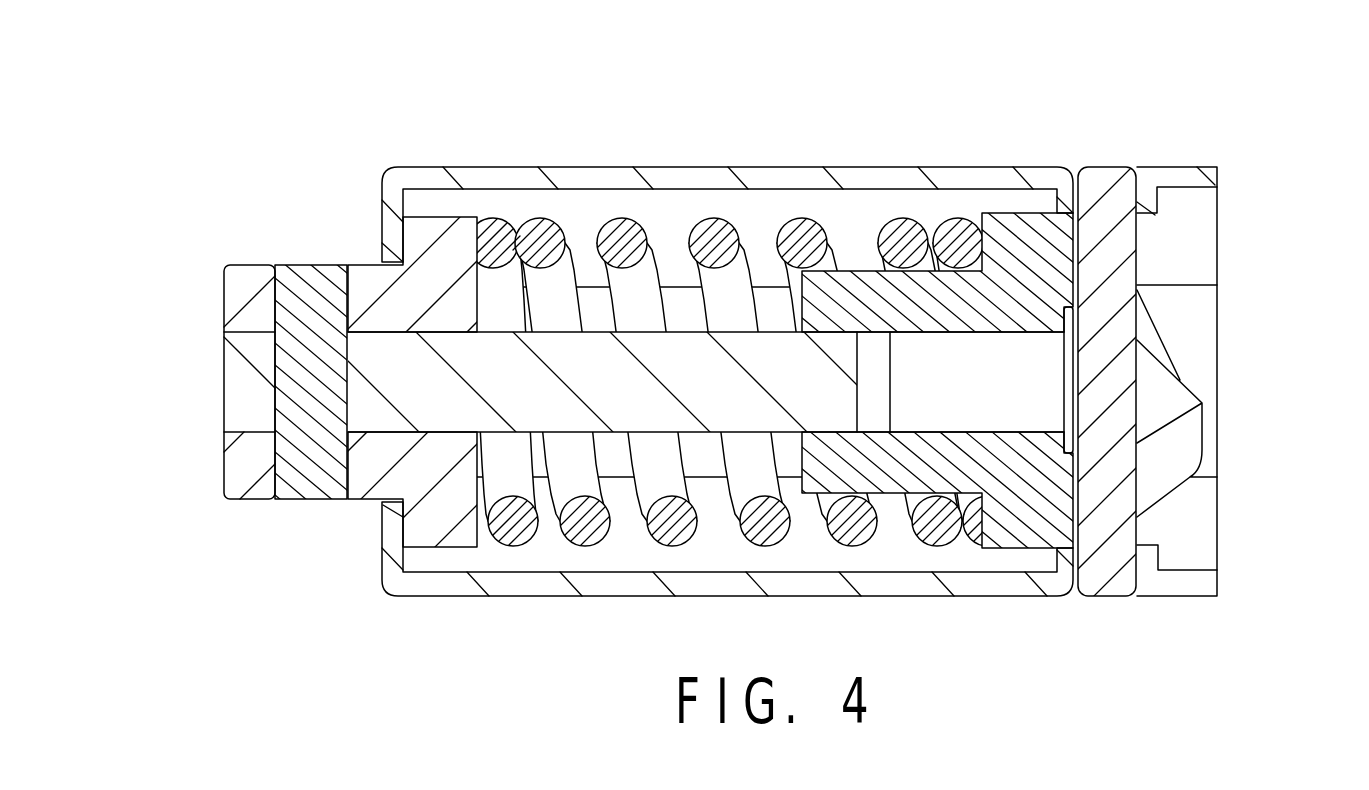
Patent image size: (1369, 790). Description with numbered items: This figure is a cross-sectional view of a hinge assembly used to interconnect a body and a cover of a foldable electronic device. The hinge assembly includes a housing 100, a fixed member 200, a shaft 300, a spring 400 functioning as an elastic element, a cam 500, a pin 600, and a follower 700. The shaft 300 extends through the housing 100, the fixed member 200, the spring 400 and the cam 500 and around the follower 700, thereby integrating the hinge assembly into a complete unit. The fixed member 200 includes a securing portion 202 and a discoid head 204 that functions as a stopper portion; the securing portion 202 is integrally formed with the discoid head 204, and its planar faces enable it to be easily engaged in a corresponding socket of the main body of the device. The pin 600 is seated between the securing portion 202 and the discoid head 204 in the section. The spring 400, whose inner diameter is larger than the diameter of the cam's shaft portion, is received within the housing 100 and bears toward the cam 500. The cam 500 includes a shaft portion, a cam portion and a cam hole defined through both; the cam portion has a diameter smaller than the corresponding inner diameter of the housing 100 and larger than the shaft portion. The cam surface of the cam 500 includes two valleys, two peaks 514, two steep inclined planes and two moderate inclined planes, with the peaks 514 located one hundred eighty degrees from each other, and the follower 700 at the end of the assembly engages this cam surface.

The housing 100 is at (605, 166).
The fixed member 200 is at (565, 344).
The securing portion 202 is at (243, 292).
The discoid head 204 is at (450, 260).
The shaft 300 is at (243, 384).
The spring 400 is at (720, 240).
The cam 500 is at (1018, 245).
The peaks 514 is at (1203, 403).
The pin 600 is at (316, 460).
The follower 700 is at (1108, 203).